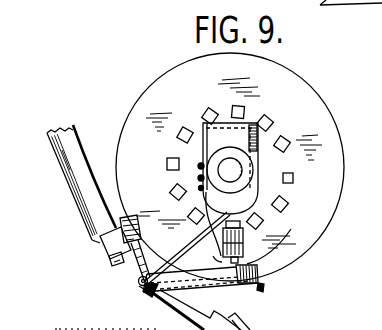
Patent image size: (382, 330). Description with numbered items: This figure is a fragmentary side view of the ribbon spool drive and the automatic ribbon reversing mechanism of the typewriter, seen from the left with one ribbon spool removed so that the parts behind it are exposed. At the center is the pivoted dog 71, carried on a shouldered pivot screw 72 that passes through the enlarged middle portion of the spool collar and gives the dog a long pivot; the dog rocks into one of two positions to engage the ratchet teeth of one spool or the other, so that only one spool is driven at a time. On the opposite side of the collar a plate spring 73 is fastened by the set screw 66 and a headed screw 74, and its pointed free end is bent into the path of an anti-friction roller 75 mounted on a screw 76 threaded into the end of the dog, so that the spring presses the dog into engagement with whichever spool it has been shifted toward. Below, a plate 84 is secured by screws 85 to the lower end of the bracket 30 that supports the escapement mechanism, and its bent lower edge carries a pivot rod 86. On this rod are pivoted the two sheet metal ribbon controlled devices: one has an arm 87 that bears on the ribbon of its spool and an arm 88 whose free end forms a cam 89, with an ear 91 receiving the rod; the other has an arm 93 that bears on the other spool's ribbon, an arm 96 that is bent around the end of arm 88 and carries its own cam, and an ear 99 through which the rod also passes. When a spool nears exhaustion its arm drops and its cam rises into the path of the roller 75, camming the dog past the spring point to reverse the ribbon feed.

The bracket 30 is at (73, 200).
The set screw 66 is at (200, 165).
The pivoted dog 71 is at (258, 188).
The shouldered pivot screw 72 is at (204, 127).
The plate spring 73 is at (206, 204).
The headed screw 74 is at (230, 167).
The anti-friction roller 75 is at (244, 243).
The screw 76 is at (280, 243).
The plate 84 is at (138, 262).
The screws 85 is at (128, 217).
The pivot rod 86 is at (138, 287).
The arm 87 is at (262, 284).
The arm 88 is at (165, 299).
The cam 89 is at (222, 310).
The ear 91 is at (214, 262).
The arm 93 is at (185, 261).
The arm 96 is at (258, 270).
The ear 99 is at (141, 292).